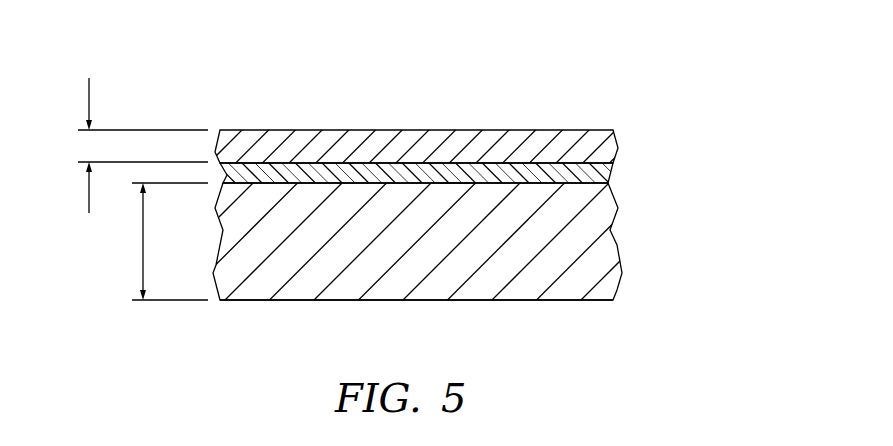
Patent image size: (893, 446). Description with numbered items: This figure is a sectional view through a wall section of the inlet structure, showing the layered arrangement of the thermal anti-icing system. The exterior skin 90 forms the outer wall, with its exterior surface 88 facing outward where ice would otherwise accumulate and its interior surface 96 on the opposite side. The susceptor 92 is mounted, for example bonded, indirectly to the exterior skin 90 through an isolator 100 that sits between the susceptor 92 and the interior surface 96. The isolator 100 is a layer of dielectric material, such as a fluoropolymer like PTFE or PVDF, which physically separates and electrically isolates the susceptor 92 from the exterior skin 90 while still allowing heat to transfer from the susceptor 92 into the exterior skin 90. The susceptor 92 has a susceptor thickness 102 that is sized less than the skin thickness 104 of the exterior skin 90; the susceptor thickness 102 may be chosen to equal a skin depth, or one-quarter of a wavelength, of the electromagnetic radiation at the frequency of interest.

The exterior surface 88 is at (552, 301).
The exterior skin 90 is at (615, 250).
The susceptor 92 is at (614, 139).
The interior surface 96 is at (456, 182).
The isolator 100 is at (611, 173).
The susceptor thickness 102 is at (89, 94).
The skin thickness 104 is at (165, 241).